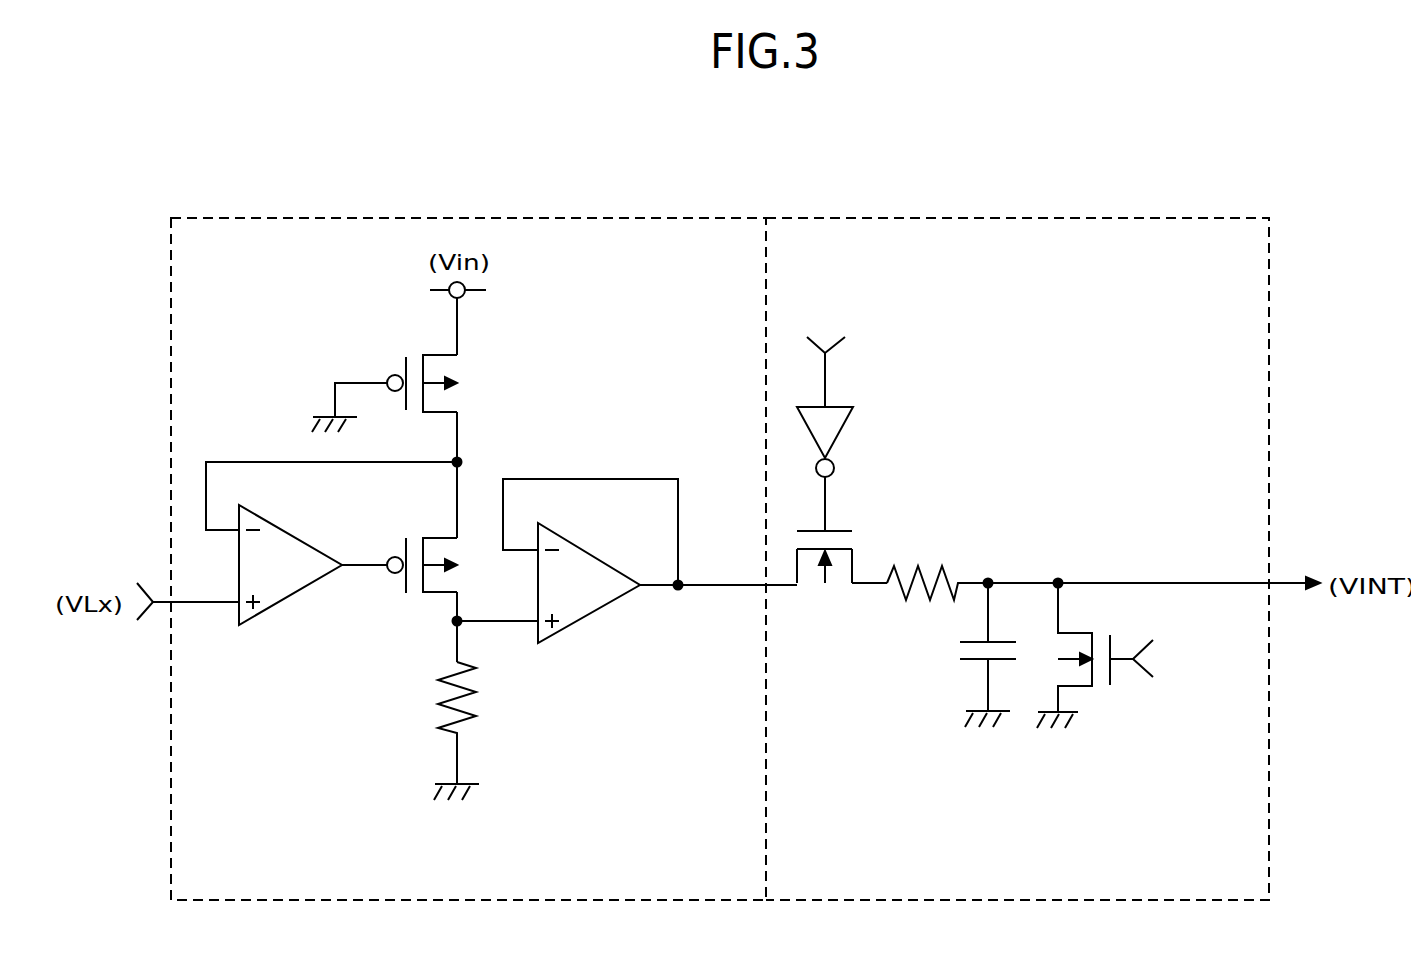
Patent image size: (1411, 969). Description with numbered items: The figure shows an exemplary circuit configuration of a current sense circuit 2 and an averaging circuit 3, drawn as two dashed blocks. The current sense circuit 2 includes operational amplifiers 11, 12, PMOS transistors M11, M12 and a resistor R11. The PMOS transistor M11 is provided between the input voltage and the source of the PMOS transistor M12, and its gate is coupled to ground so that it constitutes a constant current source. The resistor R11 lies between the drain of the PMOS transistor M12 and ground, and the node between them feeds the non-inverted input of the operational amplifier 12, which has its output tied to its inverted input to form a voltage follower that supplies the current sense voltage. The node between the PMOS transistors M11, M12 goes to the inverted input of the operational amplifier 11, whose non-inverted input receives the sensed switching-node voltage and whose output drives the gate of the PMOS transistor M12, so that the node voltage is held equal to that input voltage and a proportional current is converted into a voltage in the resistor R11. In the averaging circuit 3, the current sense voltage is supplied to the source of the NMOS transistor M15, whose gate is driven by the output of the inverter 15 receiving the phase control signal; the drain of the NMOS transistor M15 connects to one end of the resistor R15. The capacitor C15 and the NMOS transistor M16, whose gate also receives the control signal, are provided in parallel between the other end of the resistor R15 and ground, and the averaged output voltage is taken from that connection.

The current sense circuit 2 is at (646, 259).
The averaging circuit 3 is at (1201, 259).
The operational amplifier 11 is at (288, 597).
The operational amplifier 12 is at (583, 620).
The inverter 15 is at (843, 432).
The PMOS transistor M11 is at (421, 407).
The PMOS transistor M12 is at (422, 549).
The resistor R11 is at (463, 731).
The NMOS transistor M15 is at (842, 579).
The resistor R15 is at (937, 565).
The capacitor C15 is at (956, 655).
The NMOS transistor M16 is at (1136, 655).